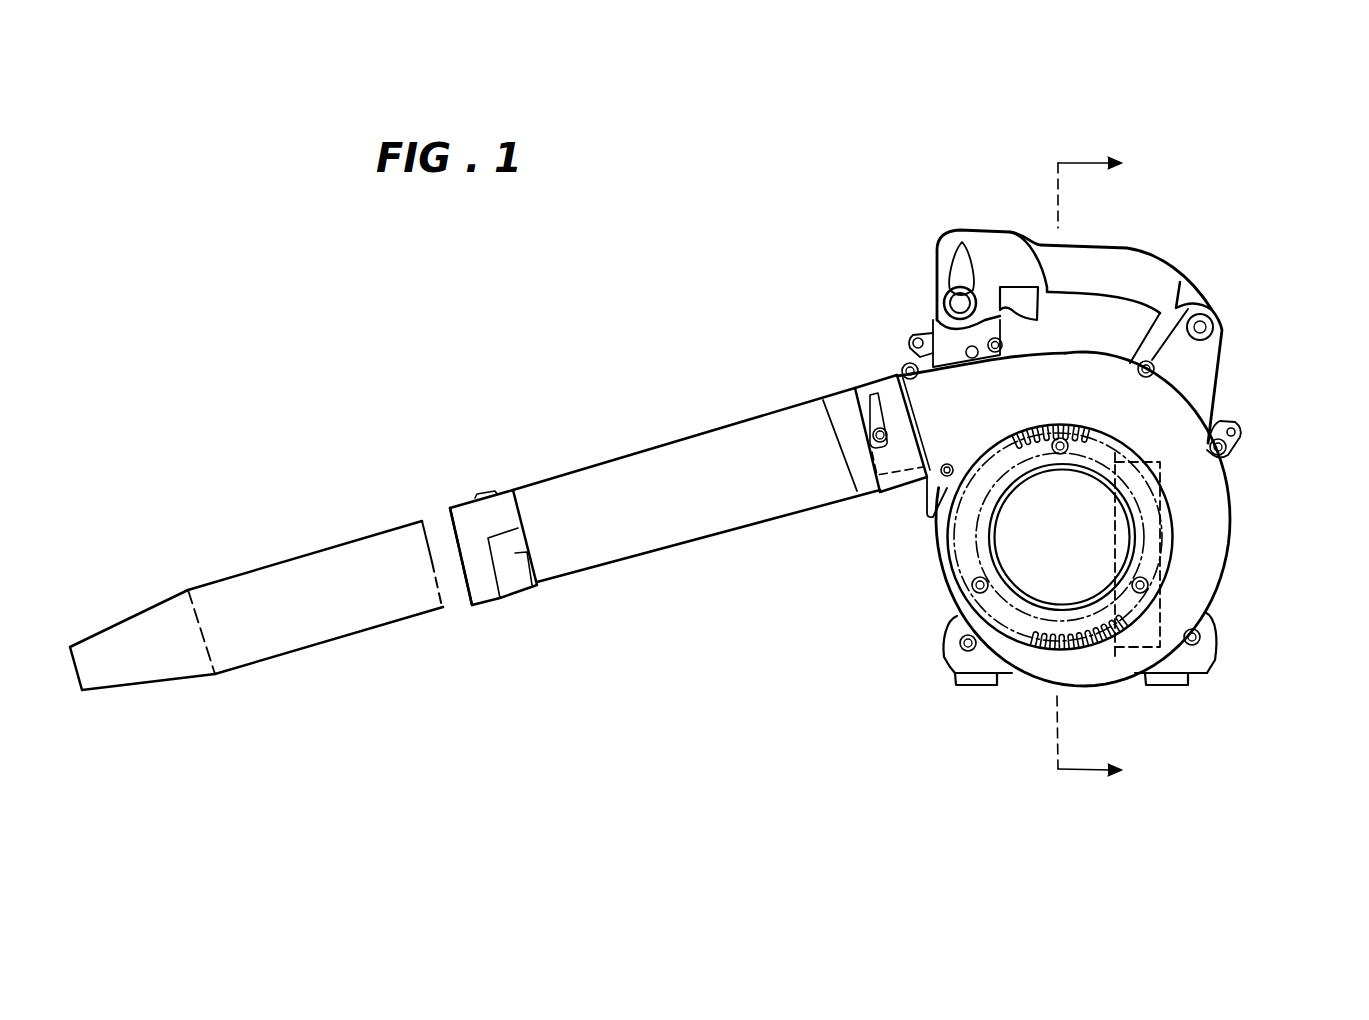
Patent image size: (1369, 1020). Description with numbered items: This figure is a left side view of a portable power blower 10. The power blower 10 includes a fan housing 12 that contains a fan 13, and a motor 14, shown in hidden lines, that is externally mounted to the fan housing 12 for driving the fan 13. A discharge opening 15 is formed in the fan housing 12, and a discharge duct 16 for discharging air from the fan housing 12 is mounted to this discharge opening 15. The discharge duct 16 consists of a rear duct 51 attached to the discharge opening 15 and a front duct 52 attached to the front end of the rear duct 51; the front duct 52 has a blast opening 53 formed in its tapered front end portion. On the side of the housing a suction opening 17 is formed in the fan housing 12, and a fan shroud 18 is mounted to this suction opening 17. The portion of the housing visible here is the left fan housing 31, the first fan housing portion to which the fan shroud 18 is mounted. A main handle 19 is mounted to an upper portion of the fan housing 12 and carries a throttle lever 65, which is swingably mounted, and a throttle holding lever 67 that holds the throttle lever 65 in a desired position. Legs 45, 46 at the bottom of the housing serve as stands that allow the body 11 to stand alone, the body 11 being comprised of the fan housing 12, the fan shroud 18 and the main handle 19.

The power blower 10 is at (707, 317).
The body 11 is at (873, 607).
The fan housing 12 is at (1234, 514).
The fan 13 is at (1017, 645).
The motor 14 is at (1167, 600).
The discharge opening 15 is at (873, 455).
The discharge duct 16 is at (589, 350).
The suction opening 17 is at (973, 567).
The fan shroud 18 is at (1113, 447).
The main handle 19 is at (1135, 240).
The left fan housing 31 is at (1197, 503).
The leg 45 is at (972, 688).
The leg 46 is at (1165, 688).
The rear duct 51 is at (550, 477).
The front duct 52 is at (360, 537).
The blast opening 53 is at (66, 660).
The throttle lever 65 is at (1025, 293).
The throttle holding lever 67 is at (960, 277).